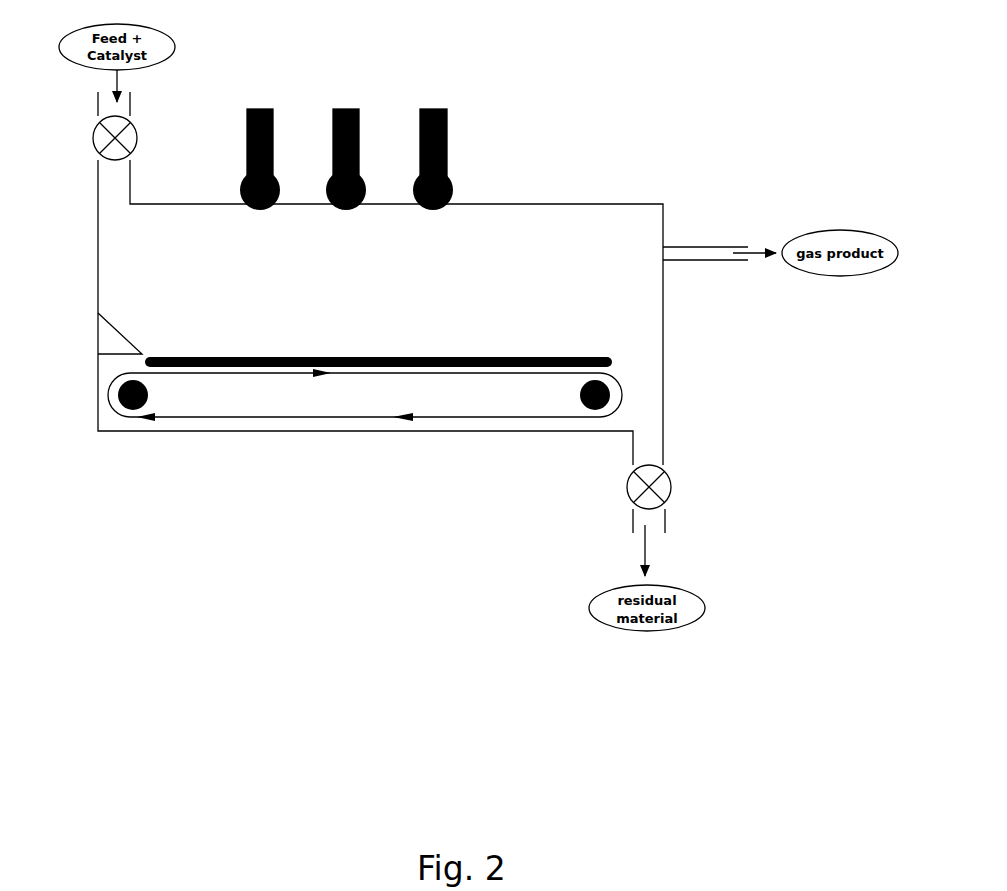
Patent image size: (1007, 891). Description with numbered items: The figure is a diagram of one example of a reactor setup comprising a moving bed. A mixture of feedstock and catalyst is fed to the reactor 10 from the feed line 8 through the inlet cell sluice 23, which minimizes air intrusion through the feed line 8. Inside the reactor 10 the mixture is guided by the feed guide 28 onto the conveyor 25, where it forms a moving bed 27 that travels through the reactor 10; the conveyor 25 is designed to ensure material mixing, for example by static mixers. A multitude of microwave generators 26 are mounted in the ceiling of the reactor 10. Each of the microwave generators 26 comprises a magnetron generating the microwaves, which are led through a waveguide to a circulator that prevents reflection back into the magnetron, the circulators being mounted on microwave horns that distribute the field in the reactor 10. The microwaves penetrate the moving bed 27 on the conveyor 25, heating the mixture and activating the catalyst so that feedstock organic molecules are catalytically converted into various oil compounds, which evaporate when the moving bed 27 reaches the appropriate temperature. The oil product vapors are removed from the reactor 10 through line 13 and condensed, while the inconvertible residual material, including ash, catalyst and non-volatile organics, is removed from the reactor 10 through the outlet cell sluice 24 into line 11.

The feed line 8 is at (98, 97).
The inlet cell sluice 23 is at (94, 137).
The reactor 10 is at (118, 247).
The microwave generators 26 is at (273, 110).
The line 13 is at (686, 251).
The feed guide 28 is at (104, 334).
The moving bed 27 is at (456, 357).
The conveyor 25 is at (508, 416).
The outlet cell sluice 24 is at (668, 490).
The line 11 is at (656, 520).